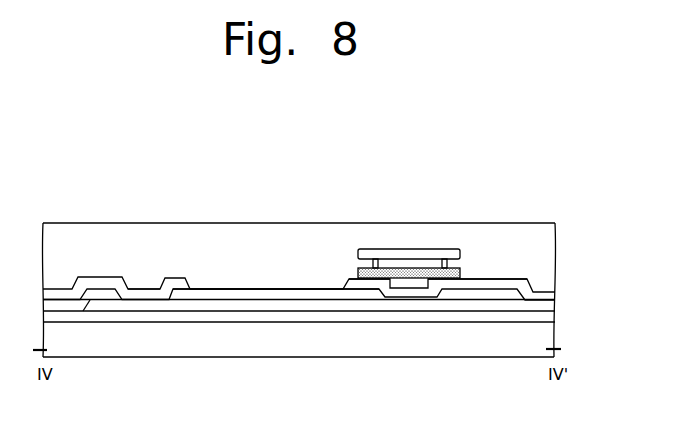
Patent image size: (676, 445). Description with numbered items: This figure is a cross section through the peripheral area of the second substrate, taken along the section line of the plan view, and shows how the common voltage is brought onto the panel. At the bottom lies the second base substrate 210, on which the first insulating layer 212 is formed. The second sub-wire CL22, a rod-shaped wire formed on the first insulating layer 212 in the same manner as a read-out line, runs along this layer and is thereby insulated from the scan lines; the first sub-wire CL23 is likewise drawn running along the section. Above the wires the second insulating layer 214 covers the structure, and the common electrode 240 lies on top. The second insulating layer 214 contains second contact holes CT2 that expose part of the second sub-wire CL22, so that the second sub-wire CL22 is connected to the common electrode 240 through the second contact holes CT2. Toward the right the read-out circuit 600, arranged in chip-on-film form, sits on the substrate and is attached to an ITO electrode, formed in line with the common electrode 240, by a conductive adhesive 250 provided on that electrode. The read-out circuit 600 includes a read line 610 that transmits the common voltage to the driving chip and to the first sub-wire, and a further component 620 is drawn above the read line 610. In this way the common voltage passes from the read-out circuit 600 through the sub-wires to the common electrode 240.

The read-out circuit 600 is at (403, 204).
The upper electrode 620 is at (373, 250).
The read line 610 is at (412, 264).
The conductive adhesive 250 is at (434, 260).
The common electrode 240 is at (556, 297).
The second insulating layer 214 is at (557, 308).
The first insulating layer 212 is at (557, 318).
The second base substrate 210 is at (557, 343).
The second contact hole CT2 is at (143, 286).
The second sub-wire CL22 is at (142, 302).
The first sub-wire CL23 is at (317, 305).